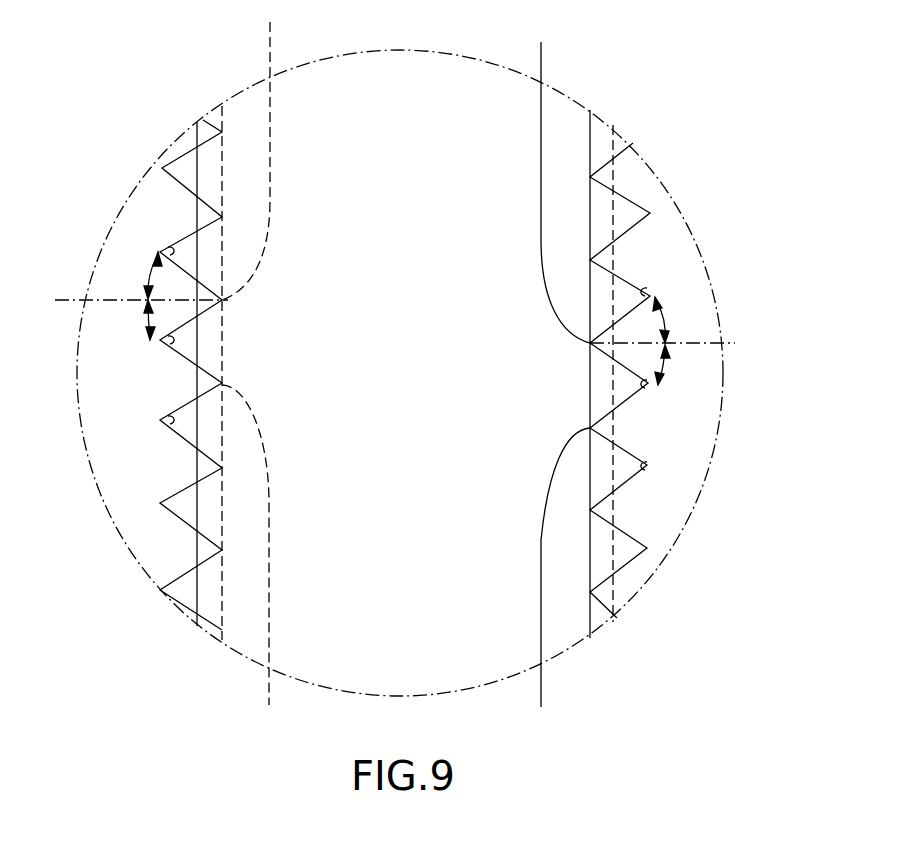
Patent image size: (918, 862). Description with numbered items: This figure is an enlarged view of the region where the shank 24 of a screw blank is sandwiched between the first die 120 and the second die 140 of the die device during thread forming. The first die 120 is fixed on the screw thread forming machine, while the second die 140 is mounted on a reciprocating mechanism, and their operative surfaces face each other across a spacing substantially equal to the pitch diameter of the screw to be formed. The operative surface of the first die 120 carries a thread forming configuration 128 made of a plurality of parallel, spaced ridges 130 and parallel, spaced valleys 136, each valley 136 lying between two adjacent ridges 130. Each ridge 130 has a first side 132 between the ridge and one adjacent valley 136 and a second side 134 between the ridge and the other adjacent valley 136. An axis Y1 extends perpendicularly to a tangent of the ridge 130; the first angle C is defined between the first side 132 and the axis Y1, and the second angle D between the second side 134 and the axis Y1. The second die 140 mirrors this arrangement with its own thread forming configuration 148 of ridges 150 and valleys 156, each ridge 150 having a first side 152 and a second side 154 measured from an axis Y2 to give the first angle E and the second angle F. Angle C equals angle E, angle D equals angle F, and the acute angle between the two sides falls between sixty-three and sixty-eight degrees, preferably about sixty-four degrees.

The shank 24 is at (484, 135).
The first die 120 is at (140, 488).
The thread forming configuration 128 is at (183, 183).
The ridge 130 is at (255, 376).
The first side 132 is at (192, 278).
The second side 134 is at (192, 320).
The valley 136 is at (168, 248).
The second die 140 is at (658, 505).
The thread forming configuration 148 is at (620, 145).
The ridge 150 is at (552, 376).
The first side 152 is at (616, 330).
The second side 154 is at (618, 392).
The valley 156 is at (648, 290).
The axis Y1 is at (120, 303).
The axis Y2 is at (679, 345).
The first angle C is at (143, 275).
The second angle D is at (139, 320).
The first angle E is at (668, 320).
The second angle F is at (669, 365).